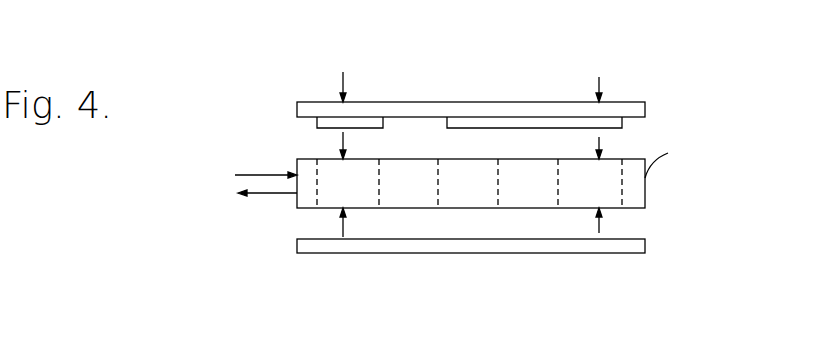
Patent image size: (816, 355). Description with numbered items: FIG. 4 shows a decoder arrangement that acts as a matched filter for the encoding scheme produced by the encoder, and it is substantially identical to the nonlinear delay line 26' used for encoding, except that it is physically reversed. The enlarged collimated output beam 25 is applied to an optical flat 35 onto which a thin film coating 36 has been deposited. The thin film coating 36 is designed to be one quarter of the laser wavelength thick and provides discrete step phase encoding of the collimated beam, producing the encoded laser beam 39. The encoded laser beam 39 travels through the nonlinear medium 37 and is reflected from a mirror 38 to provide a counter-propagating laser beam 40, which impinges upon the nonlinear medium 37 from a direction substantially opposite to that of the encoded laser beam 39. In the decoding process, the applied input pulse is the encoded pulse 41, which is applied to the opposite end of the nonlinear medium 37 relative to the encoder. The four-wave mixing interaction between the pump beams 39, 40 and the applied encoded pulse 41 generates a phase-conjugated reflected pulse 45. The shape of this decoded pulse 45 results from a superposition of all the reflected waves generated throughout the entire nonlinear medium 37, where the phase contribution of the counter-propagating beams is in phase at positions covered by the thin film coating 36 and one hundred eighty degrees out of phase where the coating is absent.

The collimated output beam 25 is at (600, 85).
The nonlinear delay line (decoder) 26' is at (460, 176).
The optical flat 35 is at (645, 112).
The thin film coating 36 is at (447, 121).
The nonlinear medium 37 is at (645, 208).
The mirror 38 is at (645, 253).
The encoded laser beam 39 is at (599, 143).
The counter-propagating laser beam 40 is at (599, 233).
The encoded pulse 41 is at (250, 175).
The phase-conjugated reflected pulse 45 is at (277, 194).